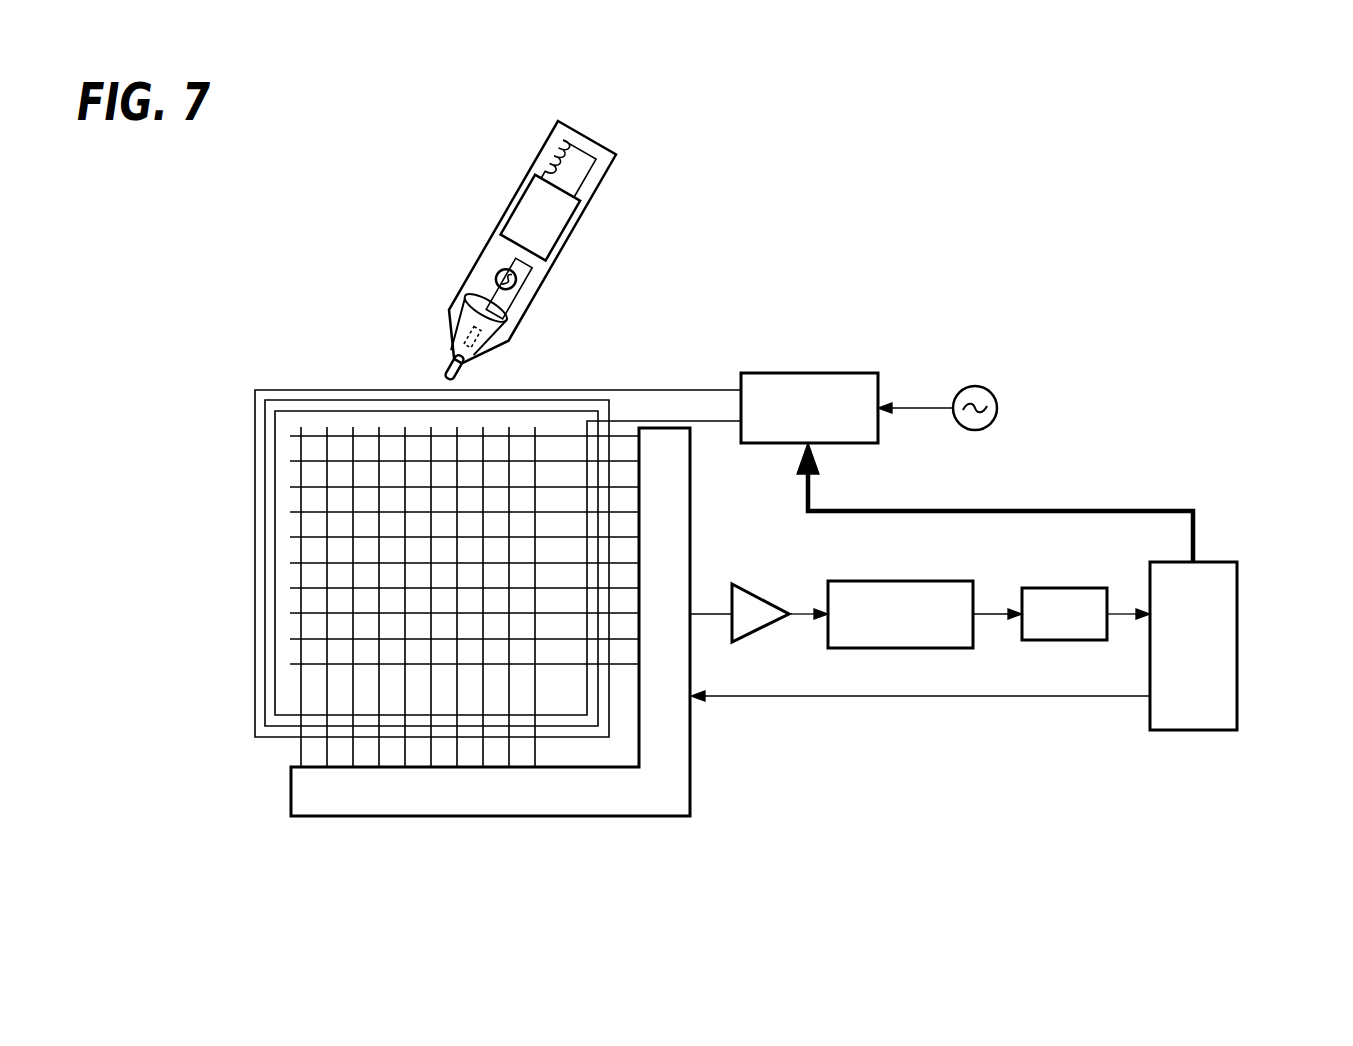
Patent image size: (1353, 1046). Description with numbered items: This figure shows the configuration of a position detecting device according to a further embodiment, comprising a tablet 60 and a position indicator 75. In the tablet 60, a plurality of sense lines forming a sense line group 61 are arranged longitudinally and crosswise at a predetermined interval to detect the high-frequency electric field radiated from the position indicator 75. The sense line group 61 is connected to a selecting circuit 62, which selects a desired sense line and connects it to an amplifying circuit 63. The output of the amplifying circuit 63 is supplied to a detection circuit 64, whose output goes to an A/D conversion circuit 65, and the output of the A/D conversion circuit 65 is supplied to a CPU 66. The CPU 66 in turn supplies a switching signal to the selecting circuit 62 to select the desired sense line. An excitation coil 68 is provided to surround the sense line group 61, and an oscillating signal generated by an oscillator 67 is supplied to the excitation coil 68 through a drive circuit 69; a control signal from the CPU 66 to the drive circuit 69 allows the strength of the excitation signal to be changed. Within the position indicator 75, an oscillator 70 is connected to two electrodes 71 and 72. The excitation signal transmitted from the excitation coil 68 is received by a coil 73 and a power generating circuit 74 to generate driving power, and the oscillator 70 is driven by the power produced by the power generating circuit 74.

The tablet 60 is at (820, 722).
The sense line group 61 is at (313, 600).
The selecting circuit 62 is at (617, 820).
The amplifying circuit 63 is at (770, 598).
The detection circuit 64 is at (898, 580).
The A/D conversion circuit 65 is at (1068, 587).
The CPU 66 is at (1237, 646).
The oscillator 67 is at (978, 385).
The excitation coil 68 is at (255, 476).
The drive circuit 69 is at (828, 372).
The oscillator 70 is at (496, 278).
The electrode 71 is at (447, 360).
The electrode 72 is at (507, 345).
The coil 73 is at (562, 143).
The power generating circuit 74 is at (573, 232).
The position indicator 75 is at (592, 128).